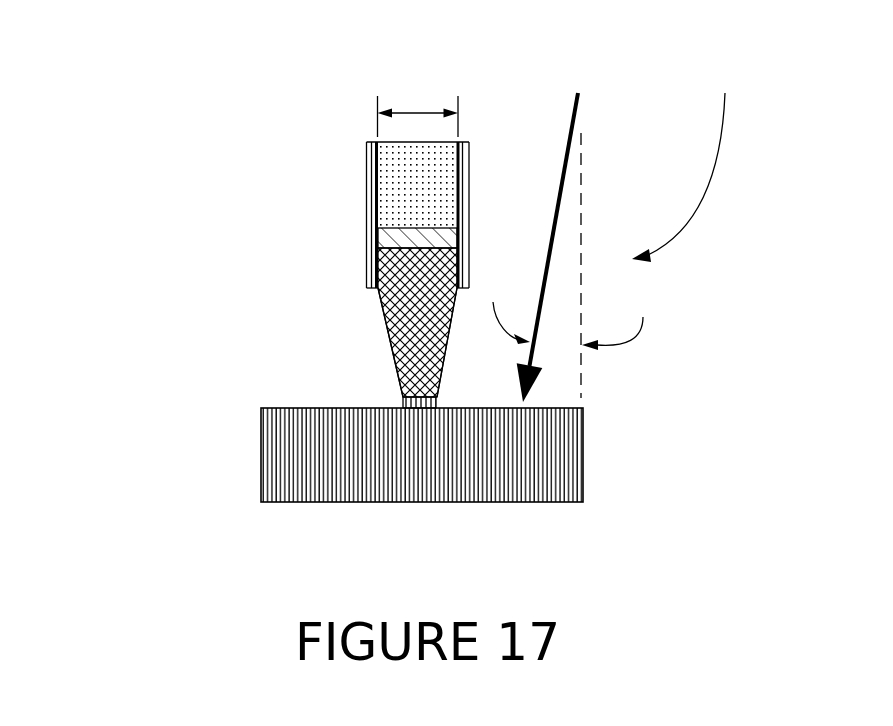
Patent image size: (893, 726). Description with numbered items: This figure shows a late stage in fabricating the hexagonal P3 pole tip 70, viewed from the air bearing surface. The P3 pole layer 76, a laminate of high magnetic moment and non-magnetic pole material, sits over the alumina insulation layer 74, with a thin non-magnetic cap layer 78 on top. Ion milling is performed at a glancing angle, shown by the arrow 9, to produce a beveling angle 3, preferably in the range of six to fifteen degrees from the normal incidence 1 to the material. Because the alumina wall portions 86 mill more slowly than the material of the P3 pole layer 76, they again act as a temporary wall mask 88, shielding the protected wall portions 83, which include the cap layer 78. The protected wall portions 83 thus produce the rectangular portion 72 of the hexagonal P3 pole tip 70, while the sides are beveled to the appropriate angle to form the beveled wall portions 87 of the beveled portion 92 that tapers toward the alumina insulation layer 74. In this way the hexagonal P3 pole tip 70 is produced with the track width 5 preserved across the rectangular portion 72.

The track width 5 is at (420, 112).
The arrow 9 is at (555, 205).
The hexagonal P3 pole tip 70 is at (686, 160).
The normal incidence 1 is at (582, 213).
The beveling angle 3 is at (612, 344).
The rectangular portion 72 is at (437, 277).
The alumina insulation layer 74 is at (261, 469).
The P3 pole layer 76 is at (398, 380).
The cap layer 78 is at (380, 260).
The protected wall portions 83 is at (380, 243).
The alumina wall portions 86 is at (366, 202).
The beveled wall portions 87 is at (393, 348).
The temporary wall mask 88 is at (366, 170).
The beveled portion 92 is at (405, 318).